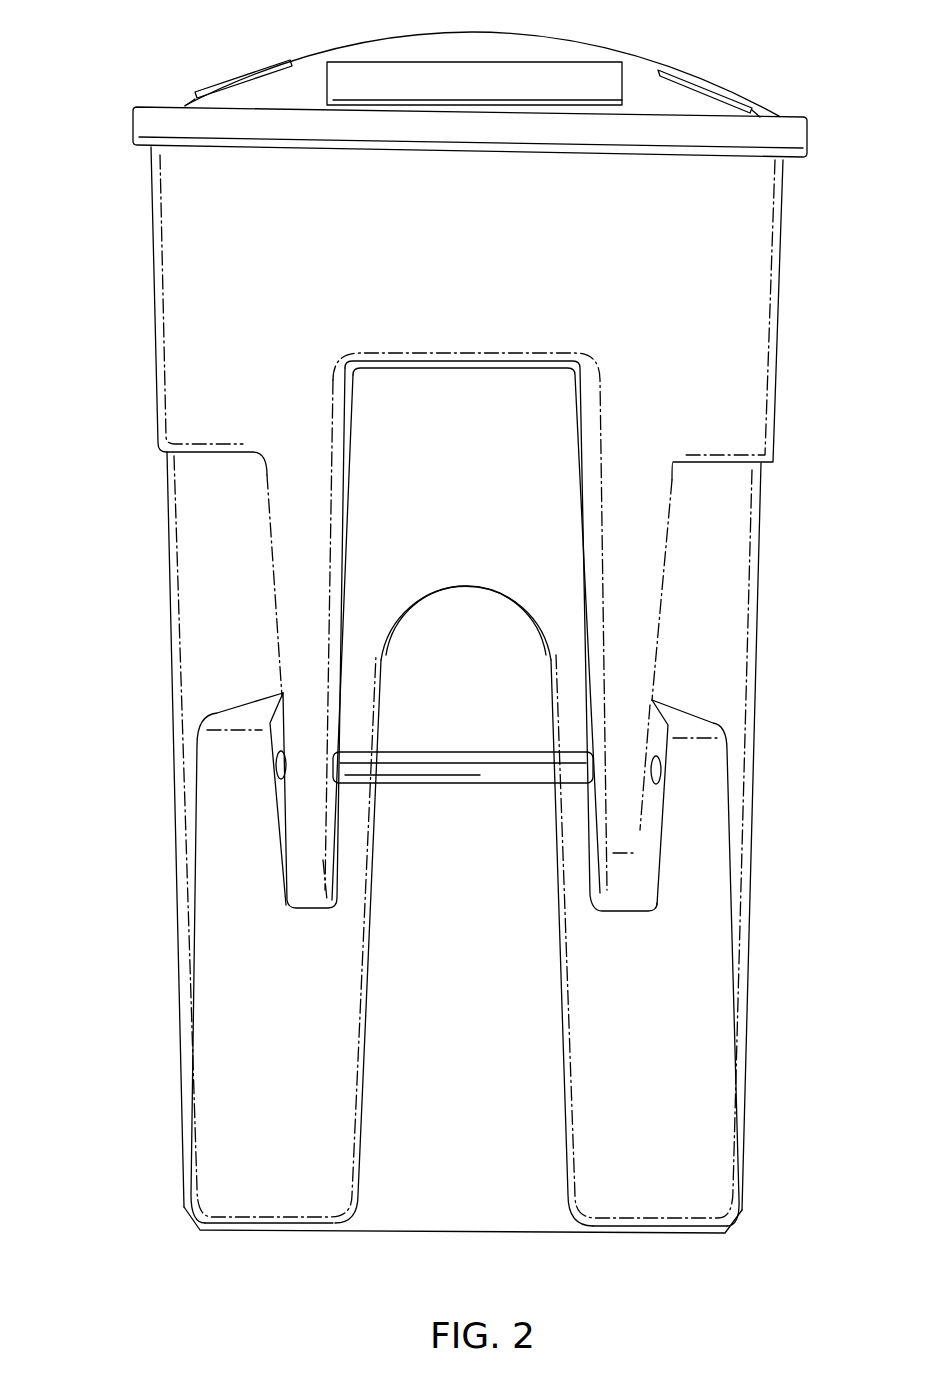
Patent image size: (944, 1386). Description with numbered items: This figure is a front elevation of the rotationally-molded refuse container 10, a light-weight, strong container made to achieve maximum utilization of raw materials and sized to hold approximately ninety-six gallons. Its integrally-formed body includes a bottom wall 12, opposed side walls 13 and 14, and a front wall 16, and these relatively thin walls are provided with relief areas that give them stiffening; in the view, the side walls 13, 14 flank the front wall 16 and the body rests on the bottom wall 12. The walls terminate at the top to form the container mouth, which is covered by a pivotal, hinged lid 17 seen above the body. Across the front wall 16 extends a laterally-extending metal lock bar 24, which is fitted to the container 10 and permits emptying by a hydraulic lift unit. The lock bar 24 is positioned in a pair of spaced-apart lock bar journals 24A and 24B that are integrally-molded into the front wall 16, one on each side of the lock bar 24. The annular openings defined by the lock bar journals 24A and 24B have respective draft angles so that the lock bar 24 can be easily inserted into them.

The refuse container 10 is at (134, 386).
The bottom wall 12 is at (663, 1233).
The side wall 13 is at (760, 570).
The side wall 14 is at (169, 539).
The front wall 16 is at (488, 270).
The lid 17 is at (305, 78).
The lock bar 24 is at (391, 779).
The lock bar journal 24A is at (303, 837).
The lock bar journal 24B is at (630, 840).